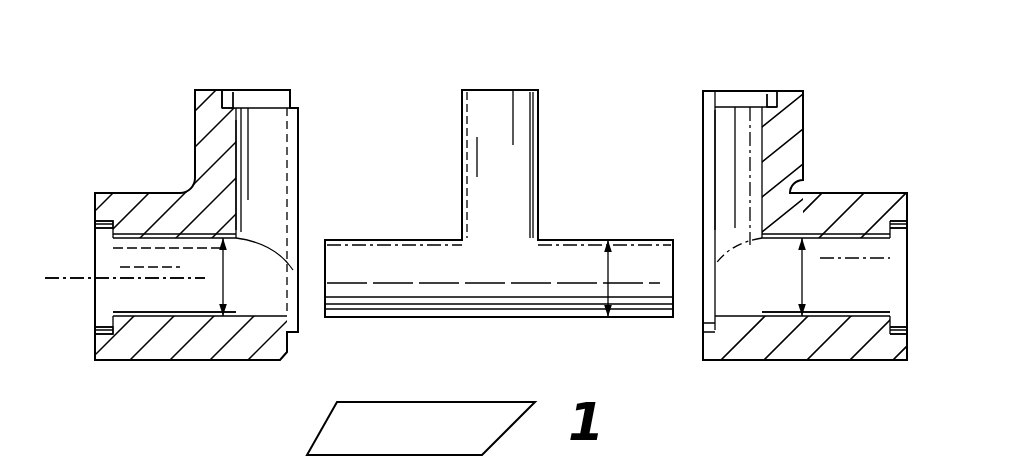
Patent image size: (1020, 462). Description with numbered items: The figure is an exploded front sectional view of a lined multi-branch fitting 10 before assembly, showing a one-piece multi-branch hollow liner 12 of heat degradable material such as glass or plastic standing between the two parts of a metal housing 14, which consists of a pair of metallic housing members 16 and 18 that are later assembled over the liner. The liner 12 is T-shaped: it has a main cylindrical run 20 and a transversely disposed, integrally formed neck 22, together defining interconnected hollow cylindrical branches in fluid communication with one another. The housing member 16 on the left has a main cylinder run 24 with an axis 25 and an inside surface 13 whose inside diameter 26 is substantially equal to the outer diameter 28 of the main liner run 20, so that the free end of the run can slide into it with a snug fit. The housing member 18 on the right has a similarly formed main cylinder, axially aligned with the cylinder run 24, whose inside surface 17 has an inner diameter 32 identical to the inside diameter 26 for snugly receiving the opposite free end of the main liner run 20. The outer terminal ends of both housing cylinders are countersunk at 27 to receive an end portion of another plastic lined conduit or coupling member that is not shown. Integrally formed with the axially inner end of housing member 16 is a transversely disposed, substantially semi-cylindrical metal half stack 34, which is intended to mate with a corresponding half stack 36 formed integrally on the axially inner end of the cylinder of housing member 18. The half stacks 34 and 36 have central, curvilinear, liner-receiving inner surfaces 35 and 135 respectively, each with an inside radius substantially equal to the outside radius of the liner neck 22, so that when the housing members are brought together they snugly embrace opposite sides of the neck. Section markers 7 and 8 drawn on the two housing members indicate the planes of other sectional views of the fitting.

The lined multi-branch fitting 10 is at (815, 160).
The multi-branch hollow liner 12 is at (548, 157).
The inside surface 13 is at (145, 308).
The metal housing 14 is at (825, 190).
The housing member 16 is at (163, 122).
The inside surface 17 is at (850, 300).
The housing member 18 is at (815, 117).
The main cylindrical run 20 is at (548, 298).
The neck 22 is at (493, 142).
The main cylinder run 24 is at (143, 205).
The axis 25 is at (58, 277).
The inside diameter 26 is at (248, 277).
The countersink 27 is at (232, 108).
The outer diameter 28 is at (608, 270).
The inner diameter 32 is at (802, 280).
The half stack 34 is at (205, 90).
The inner surface 35 is at (272, 150).
The half stack 36 is at (788, 95).
The inner surface 135 is at (727, 130).
The section line 7- 7 is at (243, 377).
The section line 8- 8 is at (758, 380).